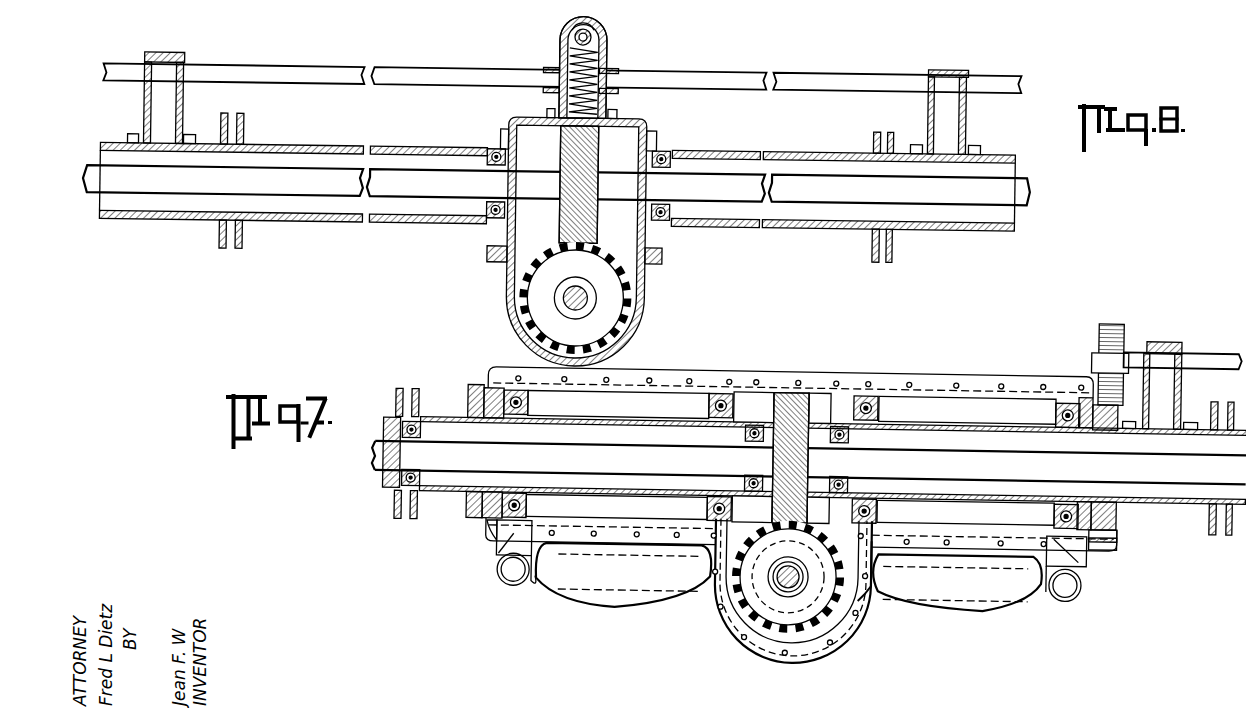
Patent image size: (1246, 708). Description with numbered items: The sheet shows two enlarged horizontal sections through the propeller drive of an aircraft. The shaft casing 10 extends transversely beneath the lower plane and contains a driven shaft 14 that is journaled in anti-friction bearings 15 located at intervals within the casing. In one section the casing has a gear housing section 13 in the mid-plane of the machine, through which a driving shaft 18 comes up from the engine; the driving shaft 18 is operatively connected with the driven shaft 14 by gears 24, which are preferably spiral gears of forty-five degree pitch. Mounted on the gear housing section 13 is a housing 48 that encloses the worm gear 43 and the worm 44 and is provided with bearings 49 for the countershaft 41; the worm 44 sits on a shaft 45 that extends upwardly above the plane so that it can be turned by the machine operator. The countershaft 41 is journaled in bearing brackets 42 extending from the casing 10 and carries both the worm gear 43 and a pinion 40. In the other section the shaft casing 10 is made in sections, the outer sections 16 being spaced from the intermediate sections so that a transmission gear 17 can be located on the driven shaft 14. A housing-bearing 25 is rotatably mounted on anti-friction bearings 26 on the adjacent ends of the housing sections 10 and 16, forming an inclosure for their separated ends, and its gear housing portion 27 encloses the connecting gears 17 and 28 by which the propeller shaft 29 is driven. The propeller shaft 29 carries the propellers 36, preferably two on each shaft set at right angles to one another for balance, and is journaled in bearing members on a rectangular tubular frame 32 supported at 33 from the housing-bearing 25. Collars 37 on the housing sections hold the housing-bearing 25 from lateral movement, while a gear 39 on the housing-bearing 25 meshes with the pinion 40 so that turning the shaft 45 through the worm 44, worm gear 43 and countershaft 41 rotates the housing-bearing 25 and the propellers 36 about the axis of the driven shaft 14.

In FIG. 8, the shaft casing 10 is at (318, 148).
In FIG. 7, the shaft casing 10 is at (1018, 395).
In FIG. 8, the gear housing section 13 is at (628, 122).
In FIG. 8, the driven shaft 14 is at (556, 185).
In FIG. 7, the driven shaft 14 is at (809, 462).
In FIG. 8, the anti-friction bearings 15 is at (486, 152).
In FIG. 7, the anti-friction bearings 15 is at (450, 417).
In FIG. 7, the outer sections 16 is at (628, 430).
In FIG. 7, the transmission gear 17 is at (803, 395).
In FIG. 8, the driving shaft 18 is at (570, 302).
In FIG. 8, the gears 24 is at (590, 240).
In FIG. 7, the housing-bearing 25 is at (975, 388).
In FIG. 7, the anti-friction bearings 26 is at (530, 408).
In FIG. 7, the gear housing portion 27 is at (868, 612).
In FIG. 7, the connecting gear 28 is at (825, 610).
In FIG. 7, the propeller shaft 29 is at (795, 585).
In FIG. 7, the rectangular tubular frame 32 is at (535, 585).
In FIG. 7, the support 33 is at (500, 545).
In FIG. 7, the propellers 36 is at (788, 578).
In FIG. 7, the collars 37 is at (1117, 515).
In FIG. 7, the gear 39 is at (1118, 545).
In FIG. 7, the pinion 40 is at (1112, 330).
In FIG. 8, the countershaft 41 is at (256, 72).
In FIG. 7, the countershaft 41 is at (1200, 356).
In FIG. 8, the bearing brackets 42 is at (190, 52).
In FIG. 7, the bearing brackets 42 is at (1170, 340).
In FIG. 8, the worm gear 43 is at (607, 66).
In FIG. 8, the worm 44 is at (590, 34).
In FIG. 8, the shaft 45 is at (571, 31).
In FIG. 8, the housing 48 is at (562, 50).
In FIG. 8, the bearings 49 is at (542, 69).